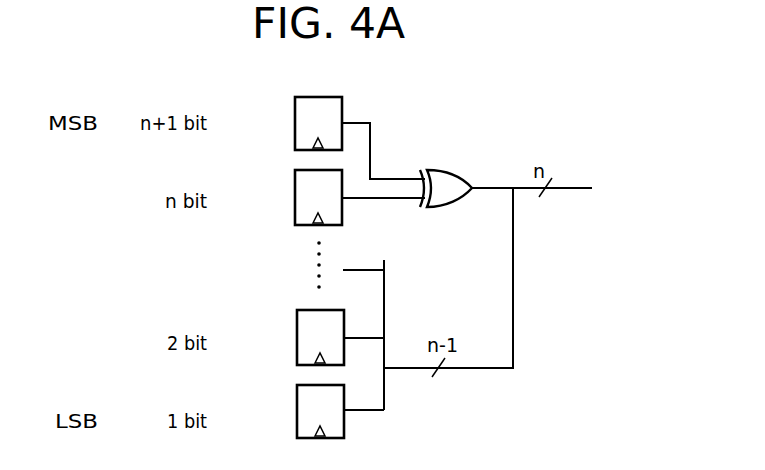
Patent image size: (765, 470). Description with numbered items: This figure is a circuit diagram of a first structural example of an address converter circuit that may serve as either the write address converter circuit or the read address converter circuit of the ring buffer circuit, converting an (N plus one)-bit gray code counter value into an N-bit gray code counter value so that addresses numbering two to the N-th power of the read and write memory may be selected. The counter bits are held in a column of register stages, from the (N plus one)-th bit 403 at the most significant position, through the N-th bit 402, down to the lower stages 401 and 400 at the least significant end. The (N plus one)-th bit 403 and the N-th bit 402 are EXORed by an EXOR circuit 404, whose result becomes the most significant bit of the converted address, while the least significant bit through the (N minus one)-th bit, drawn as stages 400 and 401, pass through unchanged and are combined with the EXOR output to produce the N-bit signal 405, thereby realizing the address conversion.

The flip-flop for 1 bit (LSB) 400 is at (303, 401).
The flip-flop for 2 bit 401 is at (302, 326).
The N-th bit 402 is at (300, 187).
The (N+1)-th bit 403 is at (300, 112).
The EXOR circuit 404 is at (455, 170).
The N-bit signal 405 is at (567, 188).